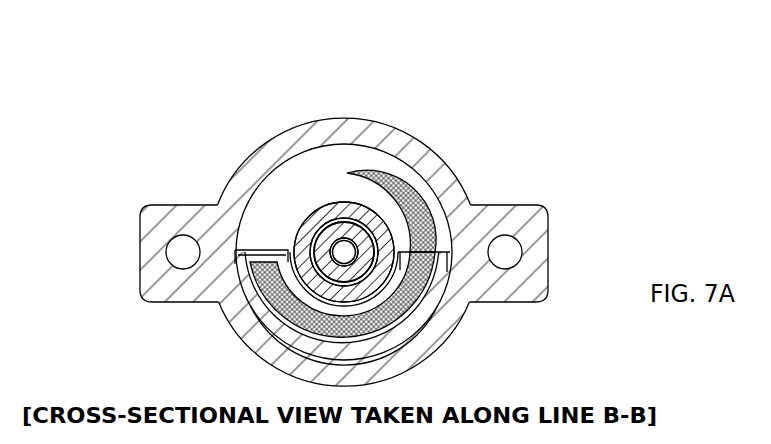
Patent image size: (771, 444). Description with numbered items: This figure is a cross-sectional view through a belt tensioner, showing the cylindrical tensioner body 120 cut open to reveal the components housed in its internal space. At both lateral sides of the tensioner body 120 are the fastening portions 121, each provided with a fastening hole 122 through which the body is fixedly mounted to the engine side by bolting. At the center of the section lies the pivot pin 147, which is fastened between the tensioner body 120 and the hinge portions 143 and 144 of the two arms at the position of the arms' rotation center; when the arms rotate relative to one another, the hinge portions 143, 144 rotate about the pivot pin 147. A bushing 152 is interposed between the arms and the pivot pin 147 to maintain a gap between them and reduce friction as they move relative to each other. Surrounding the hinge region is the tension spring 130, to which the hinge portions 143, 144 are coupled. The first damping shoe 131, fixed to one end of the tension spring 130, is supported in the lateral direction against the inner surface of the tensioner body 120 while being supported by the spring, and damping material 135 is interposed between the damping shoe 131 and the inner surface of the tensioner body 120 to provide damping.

The tensioner body 120 is at (353, 117).
The fastening portion 121 is at (516, 205).
The fastening hole 122 is at (503, 250).
The tension spring 130 is at (456, 312).
The first damping shoe 131 is at (221, 313).
The damping material 135 is at (260, 325).
The hinge portion 143 is at (310, 218).
The hinge portion 144 is at (365, 217).
The pivot pin 147 is at (342, 241).
The bushing 152 is at (280, 250).